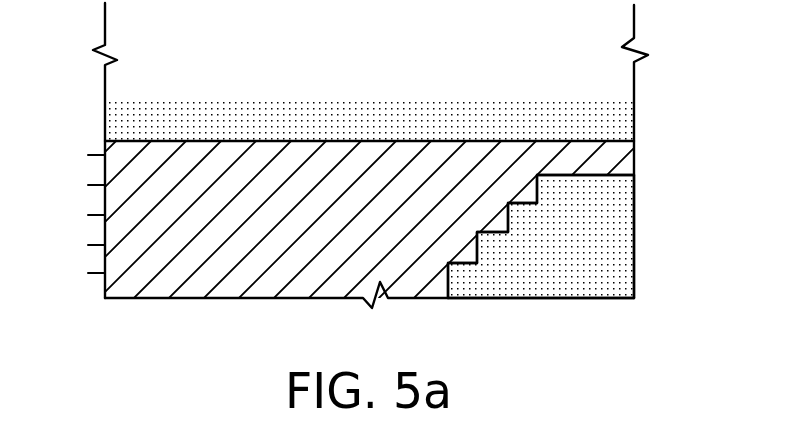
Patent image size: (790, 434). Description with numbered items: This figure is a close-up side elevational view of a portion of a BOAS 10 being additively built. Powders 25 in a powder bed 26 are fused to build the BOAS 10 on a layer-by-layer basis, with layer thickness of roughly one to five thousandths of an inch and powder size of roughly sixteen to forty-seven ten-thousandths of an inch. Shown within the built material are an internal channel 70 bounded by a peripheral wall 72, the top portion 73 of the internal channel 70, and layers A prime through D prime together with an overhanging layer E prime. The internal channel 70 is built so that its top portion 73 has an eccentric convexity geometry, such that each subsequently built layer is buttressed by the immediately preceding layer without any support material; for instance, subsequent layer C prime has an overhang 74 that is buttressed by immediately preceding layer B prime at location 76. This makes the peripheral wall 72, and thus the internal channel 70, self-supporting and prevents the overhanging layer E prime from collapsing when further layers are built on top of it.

The BOAS 10 is at (231, 308).
The powder bed 26 is at (306, 100).
The powders 25 is at (622, 120).
The internal channel 70 is at (598, 225).
The peripheral wall 72 is at (515, 230).
The top portion 73 is at (590, 188).
The overhang 74 is at (501, 218).
The location 76 is at (467, 253).